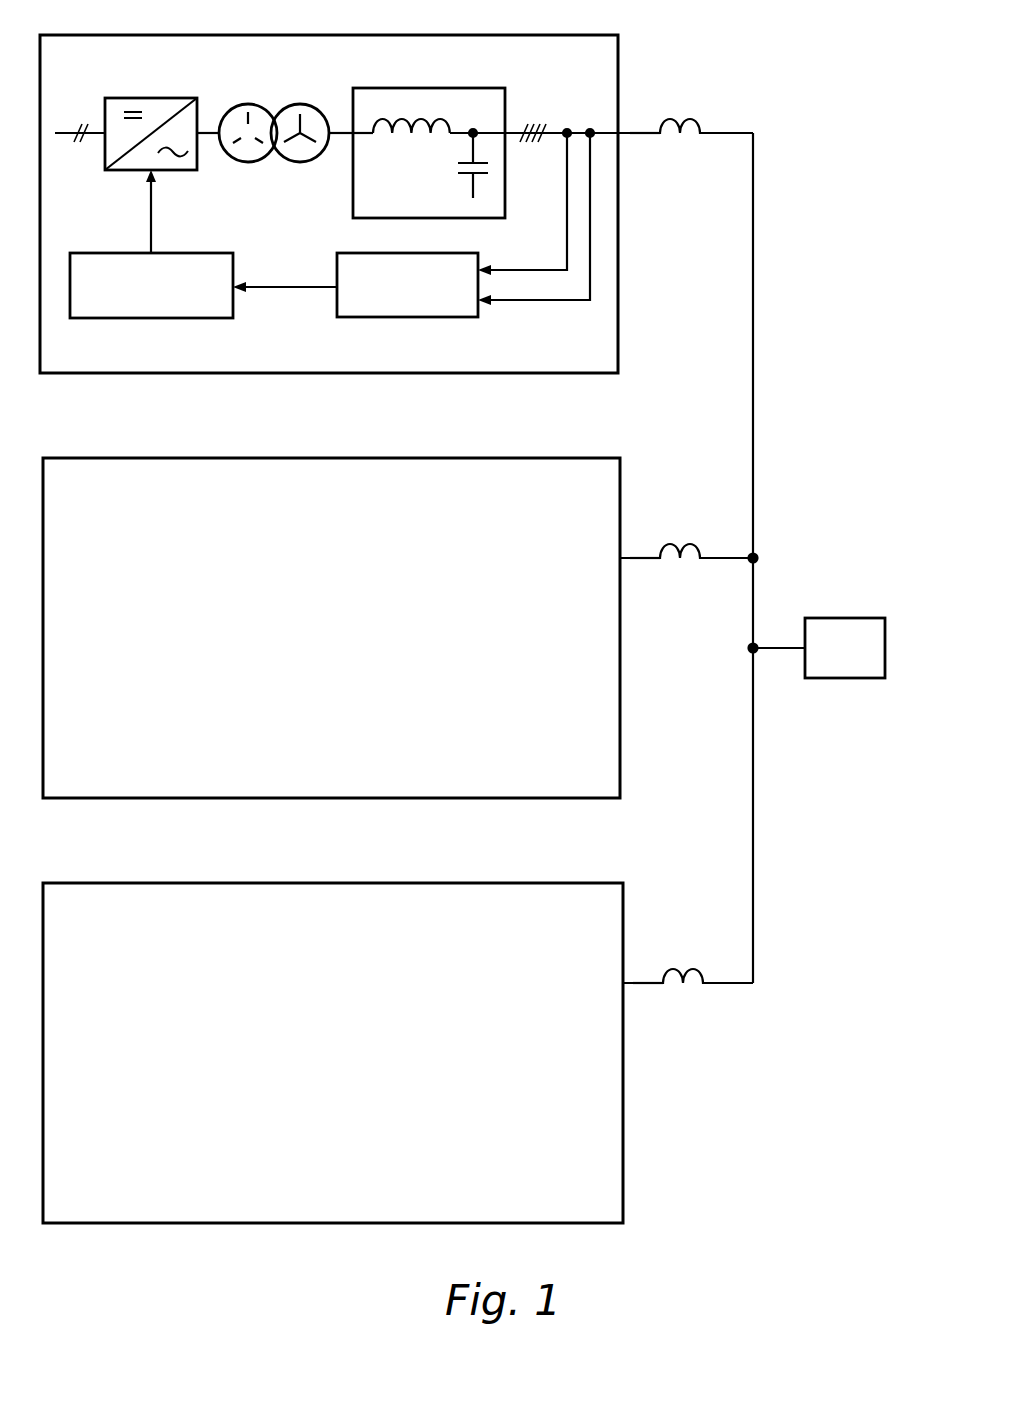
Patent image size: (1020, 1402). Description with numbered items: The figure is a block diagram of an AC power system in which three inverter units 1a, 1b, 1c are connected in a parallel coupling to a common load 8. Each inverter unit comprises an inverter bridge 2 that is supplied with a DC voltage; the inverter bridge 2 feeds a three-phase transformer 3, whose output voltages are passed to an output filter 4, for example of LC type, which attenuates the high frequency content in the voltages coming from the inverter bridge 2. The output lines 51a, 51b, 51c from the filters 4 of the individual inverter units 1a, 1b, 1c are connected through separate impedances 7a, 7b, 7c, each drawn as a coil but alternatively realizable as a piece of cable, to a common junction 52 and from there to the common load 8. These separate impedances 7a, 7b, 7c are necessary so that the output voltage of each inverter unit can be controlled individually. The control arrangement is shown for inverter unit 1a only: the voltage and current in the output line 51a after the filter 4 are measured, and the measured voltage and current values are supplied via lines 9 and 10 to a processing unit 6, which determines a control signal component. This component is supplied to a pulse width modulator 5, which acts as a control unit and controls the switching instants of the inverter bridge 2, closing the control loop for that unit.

The inverter unit 1a is at (188, 35).
The inverter unit 1b is at (188, 458).
The inverter unit 1c is at (188, 883).
The inverter bridge 2 is at (148, 98).
The three-phase transformer 3 is at (302, 163).
The output filter 4 is at (458, 88).
The pulse width modulator 5 is at (115, 253).
The processing unit 6 is at (405, 317).
The impedance 7a is at (698, 118).
The impedance 7b is at (698, 543).
The impedance 7c is at (698, 968).
The common load 8 is at (843, 680).
The line 9 is at (550, 268).
The line 10 is at (548, 302).
The output line 51a is at (668, 134).
The output line 51b is at (668, 559).
The output line 51c is at (670, 984).
The common junction 52 is at (758, 556).